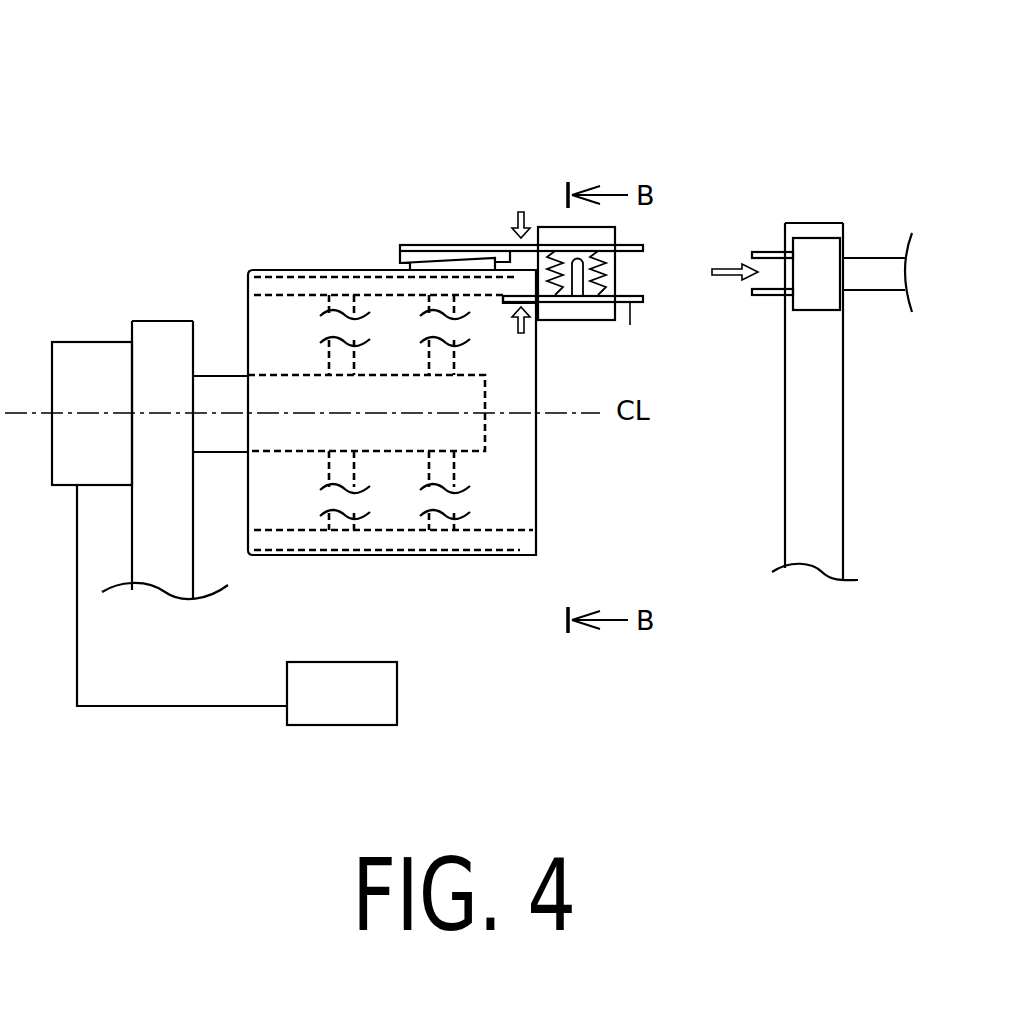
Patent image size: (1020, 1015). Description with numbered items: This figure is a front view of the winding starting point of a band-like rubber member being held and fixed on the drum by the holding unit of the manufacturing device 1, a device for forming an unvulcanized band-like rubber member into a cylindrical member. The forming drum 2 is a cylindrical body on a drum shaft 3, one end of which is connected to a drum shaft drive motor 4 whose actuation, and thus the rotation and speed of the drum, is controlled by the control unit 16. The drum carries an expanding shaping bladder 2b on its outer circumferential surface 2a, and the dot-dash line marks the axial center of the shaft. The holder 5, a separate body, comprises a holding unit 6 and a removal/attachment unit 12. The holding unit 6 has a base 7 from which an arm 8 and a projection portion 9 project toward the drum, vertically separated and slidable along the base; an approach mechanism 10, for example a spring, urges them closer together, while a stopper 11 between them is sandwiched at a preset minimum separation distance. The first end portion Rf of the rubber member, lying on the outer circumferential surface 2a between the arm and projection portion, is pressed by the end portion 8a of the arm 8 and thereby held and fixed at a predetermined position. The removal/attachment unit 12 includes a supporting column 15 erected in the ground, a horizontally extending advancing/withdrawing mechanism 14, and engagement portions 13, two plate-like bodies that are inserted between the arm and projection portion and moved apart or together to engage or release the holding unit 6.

The manufacturing device 1 is at (233, 134).
The forming drum 2 is at (214, 236).
The outer circumferential surface 2a is at (338, 269).
The shaping bladder 2b is at (386, 556).
The drum shaft 3 is at (235, 384).
The drum shaft drive motor 4 is at (103, 350).
The holder 5 is at (771, 137).
The holding unit 6 is at (524, 172).
The base 7 is at (567, 236).
The arm 8 is at (447, 245).
The end portion 8a is at (407, 265).
The first end portion Rf is at (472, 263).
The projection portion 9 is at (632, 303).
The approach mechanism 10 is at (607, 268).
The stopper 11 is at (577, 291).
The removal/attachment unit 12 is at (832, 196).
The engagement portion 13 is at (763, 252).
The advancing/withdrawing mechanism 14 is at (865, 283).
The supporting column 15 is at (797, 475).
The control unit 16 is at (326, 676).